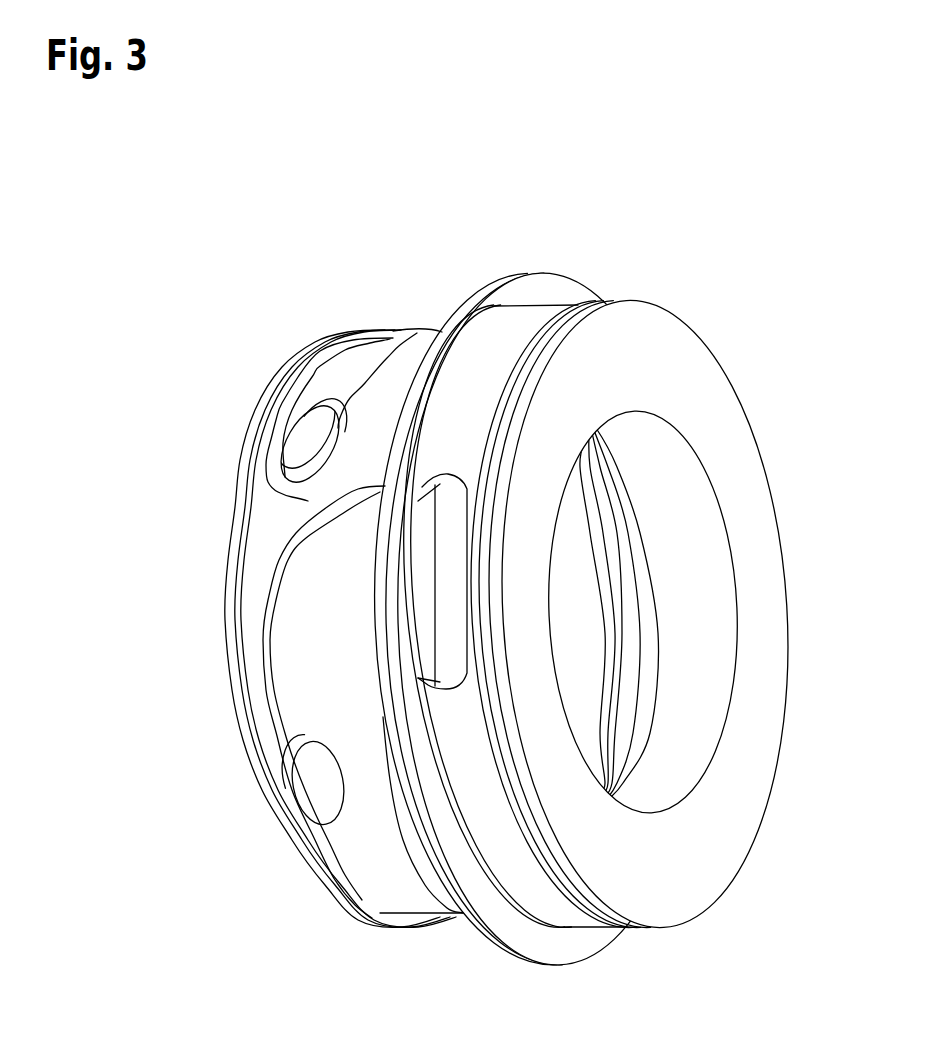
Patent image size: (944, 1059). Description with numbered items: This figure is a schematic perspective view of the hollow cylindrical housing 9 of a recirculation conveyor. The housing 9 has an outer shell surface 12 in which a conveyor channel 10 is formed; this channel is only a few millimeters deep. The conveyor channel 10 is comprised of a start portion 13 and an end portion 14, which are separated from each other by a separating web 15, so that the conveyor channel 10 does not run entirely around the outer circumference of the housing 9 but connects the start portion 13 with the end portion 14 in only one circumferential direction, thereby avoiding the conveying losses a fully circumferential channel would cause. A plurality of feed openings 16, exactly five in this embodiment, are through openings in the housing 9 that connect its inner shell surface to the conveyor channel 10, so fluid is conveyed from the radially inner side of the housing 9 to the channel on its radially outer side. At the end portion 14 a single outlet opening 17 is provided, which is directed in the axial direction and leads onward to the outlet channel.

The hollow cylindrical housing 9 is at (258, 243).
The conveyor channel 10 is at (383, 887).
The outer shell surface 12 is at (274, 521).
The start portion 13 is at (262, 412).
The end portion 14 is at (293, 603).
The separating web 15 is at (307, 502).
The feed openings 16 is at (312, 442).
The outlet opening 17 is at (423, 548).